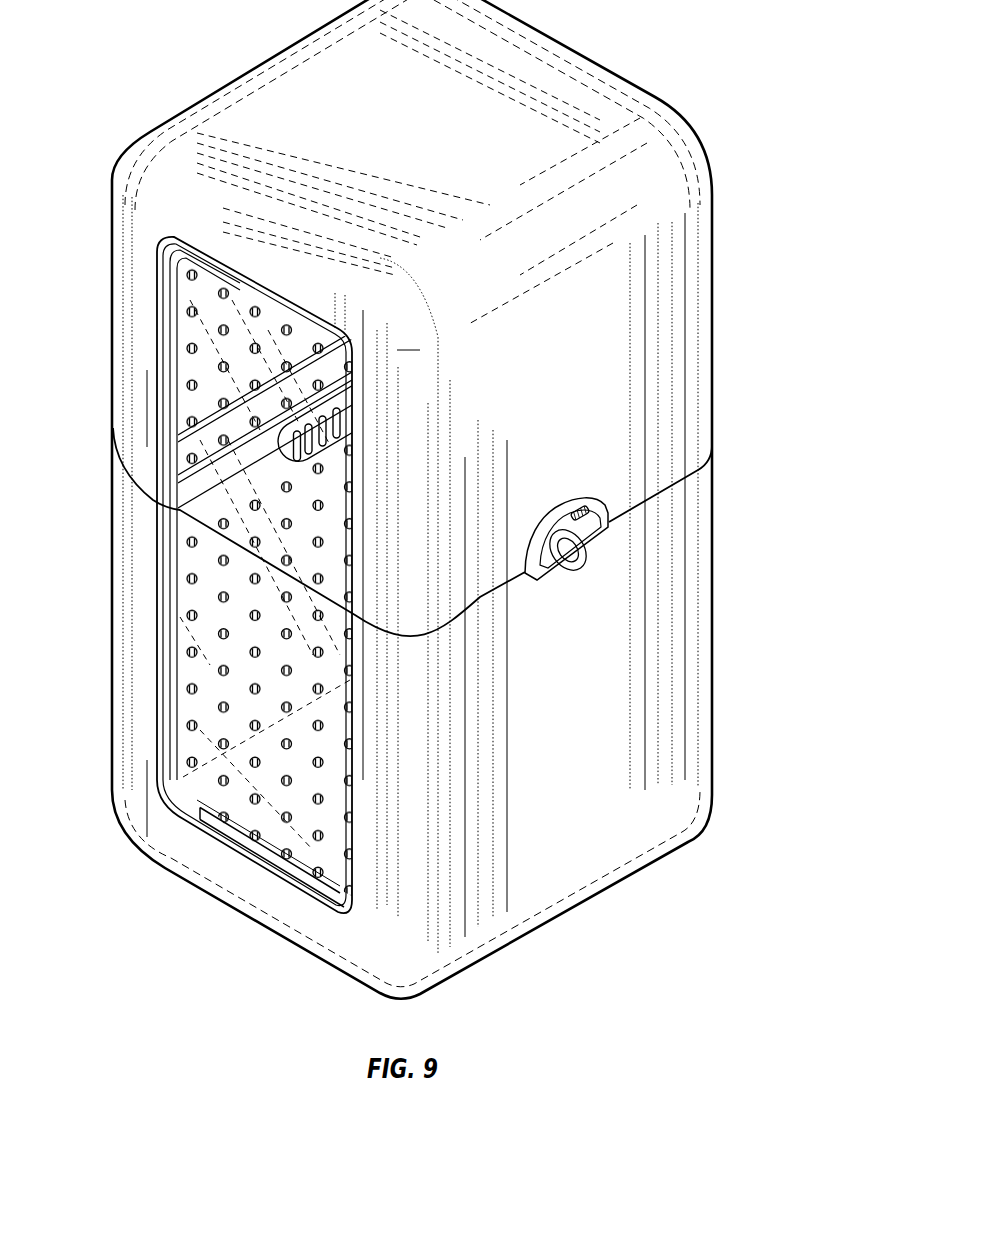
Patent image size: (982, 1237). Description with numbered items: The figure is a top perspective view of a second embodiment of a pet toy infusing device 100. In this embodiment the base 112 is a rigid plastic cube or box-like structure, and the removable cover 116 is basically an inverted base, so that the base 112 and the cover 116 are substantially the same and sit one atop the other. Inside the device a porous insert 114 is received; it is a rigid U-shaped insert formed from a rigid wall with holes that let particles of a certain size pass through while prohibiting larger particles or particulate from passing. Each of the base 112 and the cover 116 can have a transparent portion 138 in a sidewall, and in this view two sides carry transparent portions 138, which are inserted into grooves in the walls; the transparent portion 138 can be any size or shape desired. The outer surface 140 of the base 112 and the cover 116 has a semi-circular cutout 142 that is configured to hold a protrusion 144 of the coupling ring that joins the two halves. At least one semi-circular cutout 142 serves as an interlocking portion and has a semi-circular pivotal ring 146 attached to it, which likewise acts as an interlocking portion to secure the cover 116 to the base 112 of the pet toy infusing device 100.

The pet toy infusing device 100 is at (742, 258).
The base 112 is at (714, 584).
The porous insert 114 is at (217, 725).
The removable cover 116 is at (715, 188).
The transparent portion 138 is at (247, 847).
The outer surface 140 is at (693, 537).
The semi-circular cutout 142 is at (588, 523).
The protrusion 144 is at (575, 565).
The semi-circular pivotal ring 146 is at (565, 520).